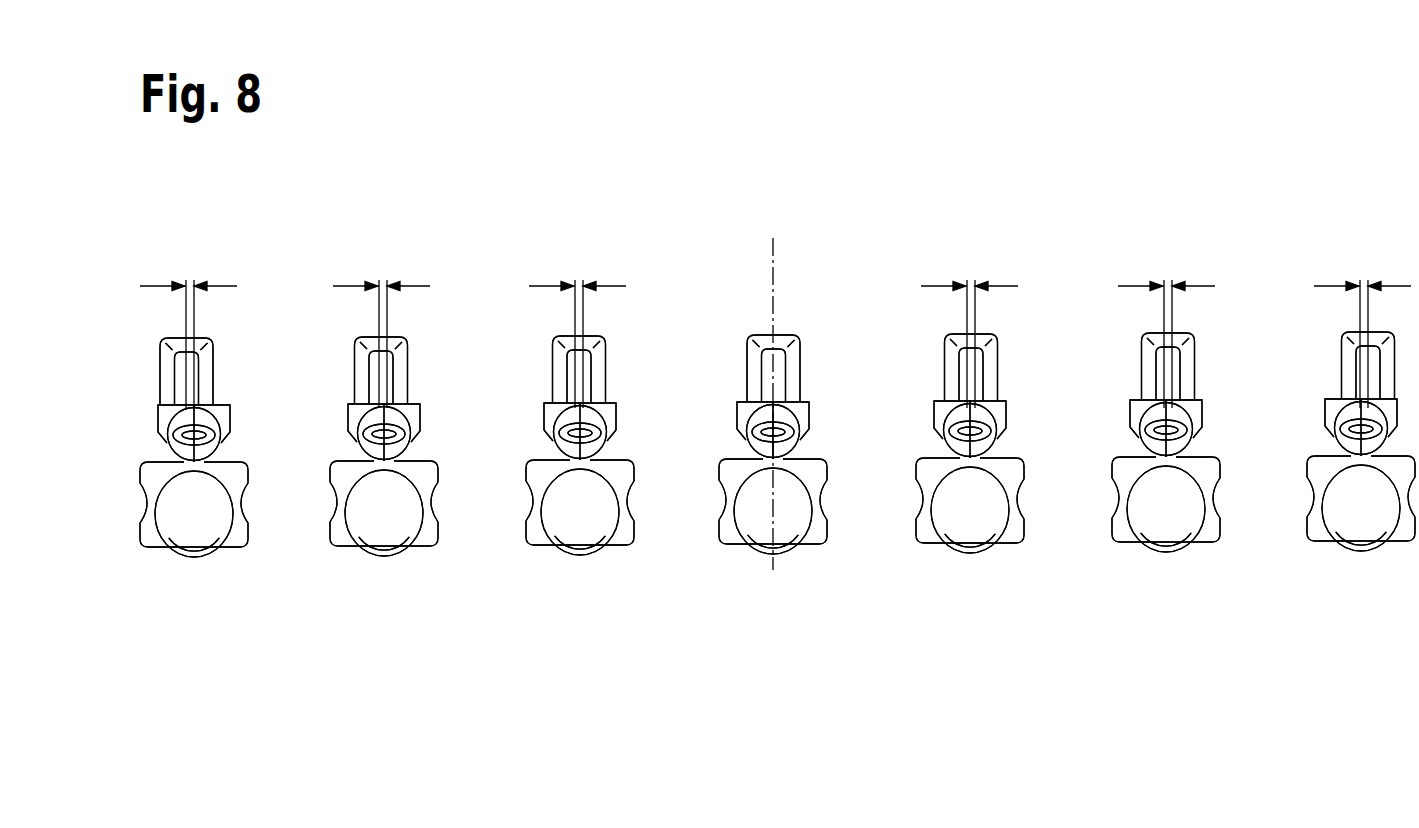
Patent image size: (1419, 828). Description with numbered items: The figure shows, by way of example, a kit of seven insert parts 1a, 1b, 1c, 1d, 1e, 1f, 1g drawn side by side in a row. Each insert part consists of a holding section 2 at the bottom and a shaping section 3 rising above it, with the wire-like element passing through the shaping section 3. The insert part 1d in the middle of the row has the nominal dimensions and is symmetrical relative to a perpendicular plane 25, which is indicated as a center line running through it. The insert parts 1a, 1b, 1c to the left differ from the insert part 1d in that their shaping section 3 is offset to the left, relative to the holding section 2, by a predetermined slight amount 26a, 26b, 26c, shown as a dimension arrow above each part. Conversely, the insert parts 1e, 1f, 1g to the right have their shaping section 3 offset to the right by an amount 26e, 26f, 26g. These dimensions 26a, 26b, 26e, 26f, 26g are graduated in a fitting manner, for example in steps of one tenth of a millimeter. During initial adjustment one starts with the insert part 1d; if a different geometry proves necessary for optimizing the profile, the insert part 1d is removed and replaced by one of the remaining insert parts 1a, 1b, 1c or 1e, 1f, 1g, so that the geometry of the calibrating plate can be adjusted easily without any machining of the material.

The insert part 1a is at (194, 457).
The insert part 1b is at (384, 457).
The insert part 1c is at (580, 457).
The insert part 1d is at (782, 432).
The insert part 1e is at (970, 457).
The insert part 1f is at (1166, 457).
The insert part 1g is at (1361, 457).
The holding section 2 is at (154, 475).
The shaping section 3 is at (176, 381).
The perpendicular plane 25 is at (775, 282).
The offset amount 26a is at (188, 324).
The offset amount 26b is at (381, 324).
The offset amount 26c is at (577, 324).
The offset amount 26e is at (969, 324).
The offset amount 26f is at (1166, 324).
The offset amount 26g is at (1362, 324).